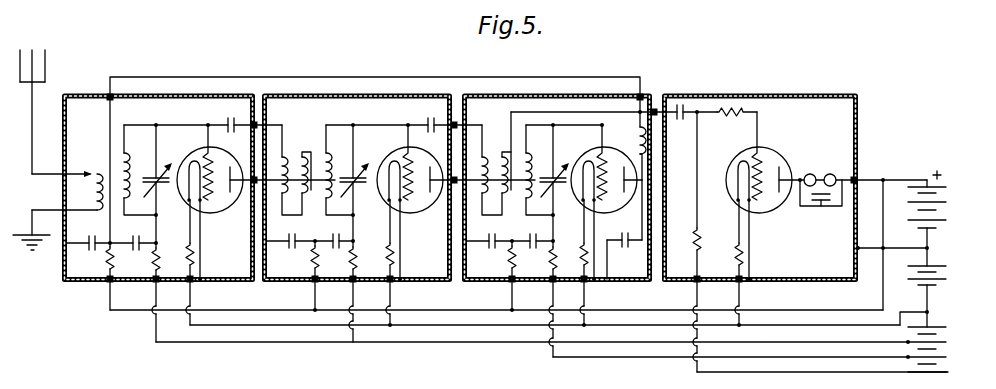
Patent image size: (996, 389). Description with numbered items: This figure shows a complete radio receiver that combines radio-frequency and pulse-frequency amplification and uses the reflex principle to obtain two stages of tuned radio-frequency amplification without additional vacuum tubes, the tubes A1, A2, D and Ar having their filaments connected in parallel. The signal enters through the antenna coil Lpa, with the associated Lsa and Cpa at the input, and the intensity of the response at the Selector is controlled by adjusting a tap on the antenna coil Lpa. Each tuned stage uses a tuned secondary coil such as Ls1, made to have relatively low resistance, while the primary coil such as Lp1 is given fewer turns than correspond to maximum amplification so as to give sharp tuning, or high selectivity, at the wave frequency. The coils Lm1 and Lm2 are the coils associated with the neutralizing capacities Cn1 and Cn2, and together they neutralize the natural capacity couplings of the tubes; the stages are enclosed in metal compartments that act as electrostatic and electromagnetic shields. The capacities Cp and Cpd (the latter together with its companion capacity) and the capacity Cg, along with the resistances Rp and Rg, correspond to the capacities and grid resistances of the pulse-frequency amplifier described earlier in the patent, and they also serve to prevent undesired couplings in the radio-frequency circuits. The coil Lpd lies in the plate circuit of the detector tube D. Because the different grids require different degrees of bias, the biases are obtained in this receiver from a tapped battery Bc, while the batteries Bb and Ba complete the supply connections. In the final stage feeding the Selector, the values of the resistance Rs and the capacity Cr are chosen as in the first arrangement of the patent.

The antenna coil Lpa is at (106, 171).
The antenna secondary coil Lsa is at (140, 158).
The antenna plate bypass capacitor Cpa is at (88, 234).
The capacity Cg is at (683, 116).
The resistance Rp is at (106, 257).
The resistance Rg is at (152, 258).
The first amplifier tube A1 is at (209, 212).
The neutralizing capacity Cn1 is at (231, 113).
The neutralizing coil Lm1 is at (282, 155).
The primary coil Lp1 is at (304, 156).
The tuned secondary coil Ls1 is at (338, 149).
The capacity Cp is at (389, 236).
The neutralizing capacity Cn2 is at (430, 118).
The second amplifier tube A2 is at (409, 220).
The neutralizing coil Lm2 is at (487, 155).
The detector plate coil Lpd is at (636, 130).
The detector tube D is at (604, 191).
The capacity Cpd is at (624, 224).
The resistance Rs is at (744, 115).
The audio amplifier tube Ar is at (752, 218).
The selector Selector is at (817, 170).
The capacity Cr is at (821, 209).
The plate battery Bb is at (942, 226).
The filament battery Ba is at (941, 295).
The tapped battery Bc is at (942, 349).